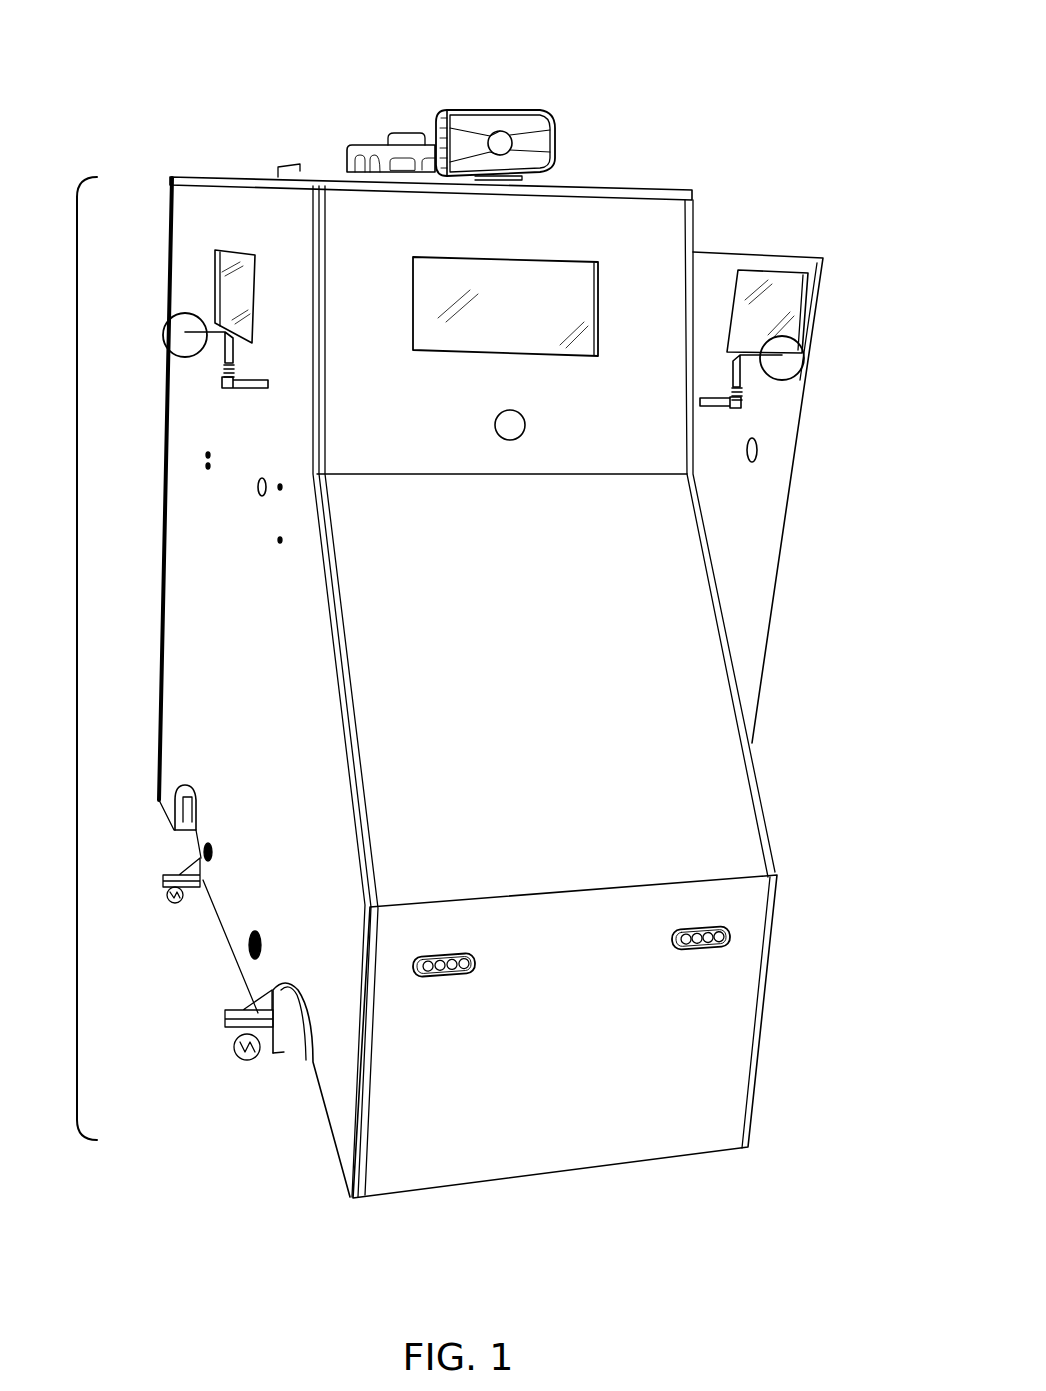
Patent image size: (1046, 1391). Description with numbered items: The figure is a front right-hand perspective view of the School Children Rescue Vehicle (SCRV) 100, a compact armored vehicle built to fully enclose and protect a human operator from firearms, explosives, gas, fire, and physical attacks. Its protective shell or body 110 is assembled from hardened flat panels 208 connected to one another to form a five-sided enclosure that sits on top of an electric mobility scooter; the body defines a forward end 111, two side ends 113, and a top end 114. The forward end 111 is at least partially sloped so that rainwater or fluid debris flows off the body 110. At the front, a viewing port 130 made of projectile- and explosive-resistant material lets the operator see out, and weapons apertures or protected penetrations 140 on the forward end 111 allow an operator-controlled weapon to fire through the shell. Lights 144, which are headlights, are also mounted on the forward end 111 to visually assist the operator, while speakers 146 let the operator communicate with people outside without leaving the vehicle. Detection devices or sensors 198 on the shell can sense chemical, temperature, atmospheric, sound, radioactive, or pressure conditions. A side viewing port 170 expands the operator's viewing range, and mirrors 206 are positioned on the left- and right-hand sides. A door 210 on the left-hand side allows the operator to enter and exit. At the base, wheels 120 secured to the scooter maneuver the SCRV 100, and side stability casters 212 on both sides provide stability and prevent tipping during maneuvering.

The School Children Rescue Vehicle (SCRV) 100 is at (144, 32).
The protective shell or body 110 is at (77, 660).
The forward end 111 is at (722, 1082).
The side ends 113 is at (167, 750).
The top end 114 is at (641, 184).
The wheels 120 is at (300, 1060).
The viewing port 130 is at (564, 258).
The weapons apertures or protected penetrations 140 is at (256, 487).
The lights 144 is at (740, 937).
The speakers 146 is at (516, 108).
The side viewing port 170 is at (232, 250).
The detection devices or sensors 198 is at (370, 145).
The mirrors 206 is at (165, 335).
The hardened flat panels 208 is at (672, 220).
The door 210 is at (778, 592).
The side stability casters 212 is at (165, 878).